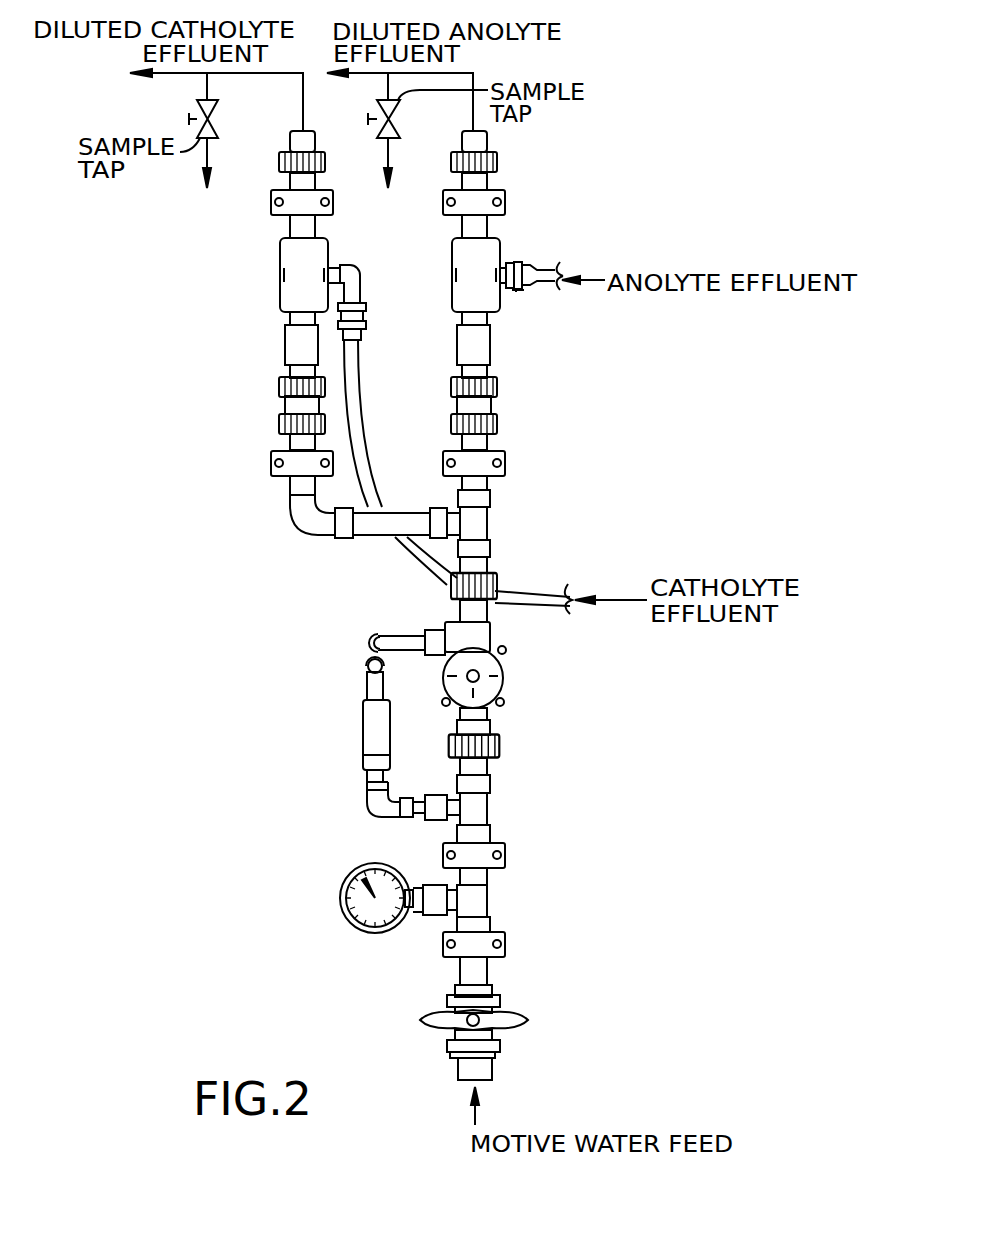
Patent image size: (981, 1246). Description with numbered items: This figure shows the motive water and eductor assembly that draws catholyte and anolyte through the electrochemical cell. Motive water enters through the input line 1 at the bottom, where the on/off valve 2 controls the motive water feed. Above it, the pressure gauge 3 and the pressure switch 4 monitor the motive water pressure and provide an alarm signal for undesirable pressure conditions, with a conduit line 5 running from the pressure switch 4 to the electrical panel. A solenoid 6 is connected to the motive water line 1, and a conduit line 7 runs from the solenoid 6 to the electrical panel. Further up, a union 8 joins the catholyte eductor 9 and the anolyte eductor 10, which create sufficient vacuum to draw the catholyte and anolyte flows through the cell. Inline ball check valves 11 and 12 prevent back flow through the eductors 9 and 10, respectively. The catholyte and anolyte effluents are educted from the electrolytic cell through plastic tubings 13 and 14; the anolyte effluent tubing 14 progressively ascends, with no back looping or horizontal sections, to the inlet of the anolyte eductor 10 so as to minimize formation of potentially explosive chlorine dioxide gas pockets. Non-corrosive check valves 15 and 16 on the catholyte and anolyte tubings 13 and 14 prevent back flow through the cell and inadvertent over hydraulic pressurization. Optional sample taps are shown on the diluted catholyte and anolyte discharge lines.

The input line 1 is at (465, 1085).
The on/off valve 2 is at (425, 1020).
The pressure gauge 3 is at (342, 900).
The pressure switch 4 is at (365, 735).
The conduit line 5 is at (367, 678).
The solenoid 6 is at (507, 680).
The conduit line 7 is at (410, 636).
The union 8 is at (452, 596).
The catholyte eductor 9 is at (272, 283).
The anolyte eductor 10 is at (446, 283).
The inline ball check valve 11 is at (283, 408).
The inline ball check valve 12 is at (457, 410).
The plastic tubing 13 is at (522, 577).
The anolyte effluent tubing 14 is at (597, 271).
The non-corrosive check valve 15 is at (366, 320).
The non-corrosive check valve 16 is at (520, 290).